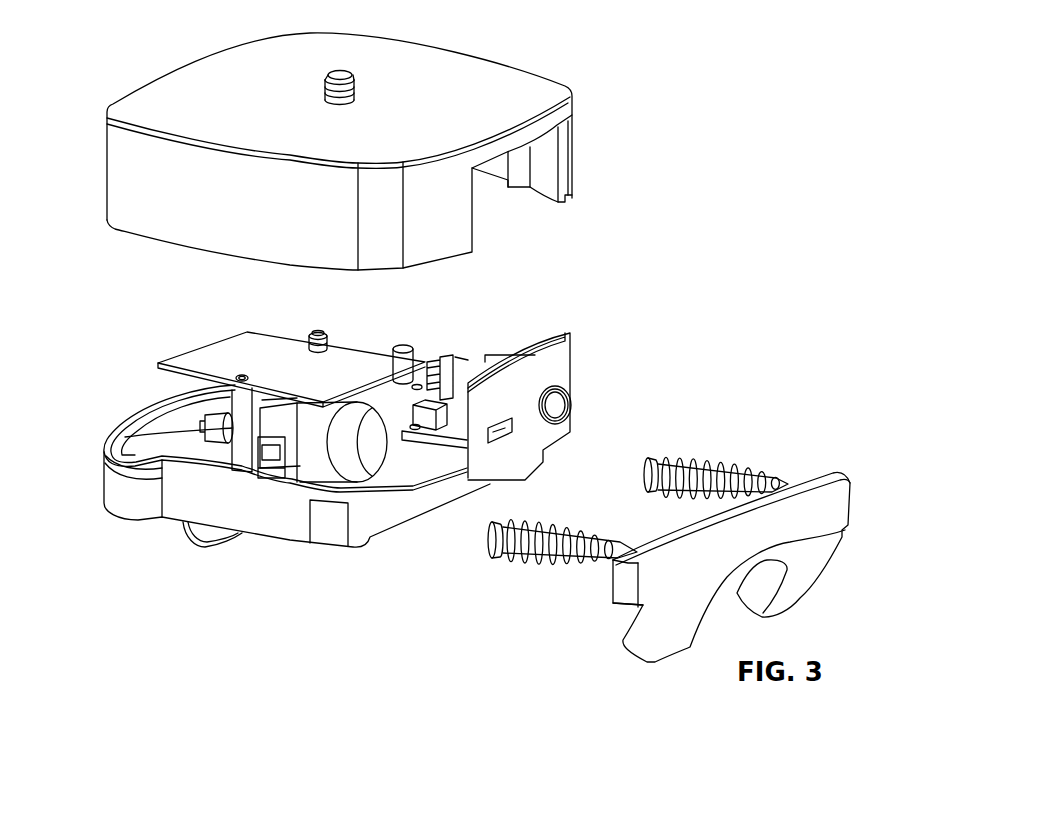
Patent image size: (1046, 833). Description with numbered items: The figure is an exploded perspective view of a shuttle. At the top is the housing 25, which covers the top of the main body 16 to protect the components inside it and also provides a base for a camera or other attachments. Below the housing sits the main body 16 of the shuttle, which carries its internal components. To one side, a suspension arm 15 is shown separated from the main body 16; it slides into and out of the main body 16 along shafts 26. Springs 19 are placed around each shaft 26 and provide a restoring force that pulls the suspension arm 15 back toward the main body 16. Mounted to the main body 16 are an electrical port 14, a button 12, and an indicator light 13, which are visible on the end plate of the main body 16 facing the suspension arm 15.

The button 12 is at (557, 405).
The indicator light 13 is at (559, 428).
The electrical port 14 is at (505, 434).
The suspension arm 15 is at (827, 480).
The main body 16 is at (190, 500).
The spring 19 is at (716, 440).
The housing 25 is at (123, 167).
The shaft 26 is at (657, 462).